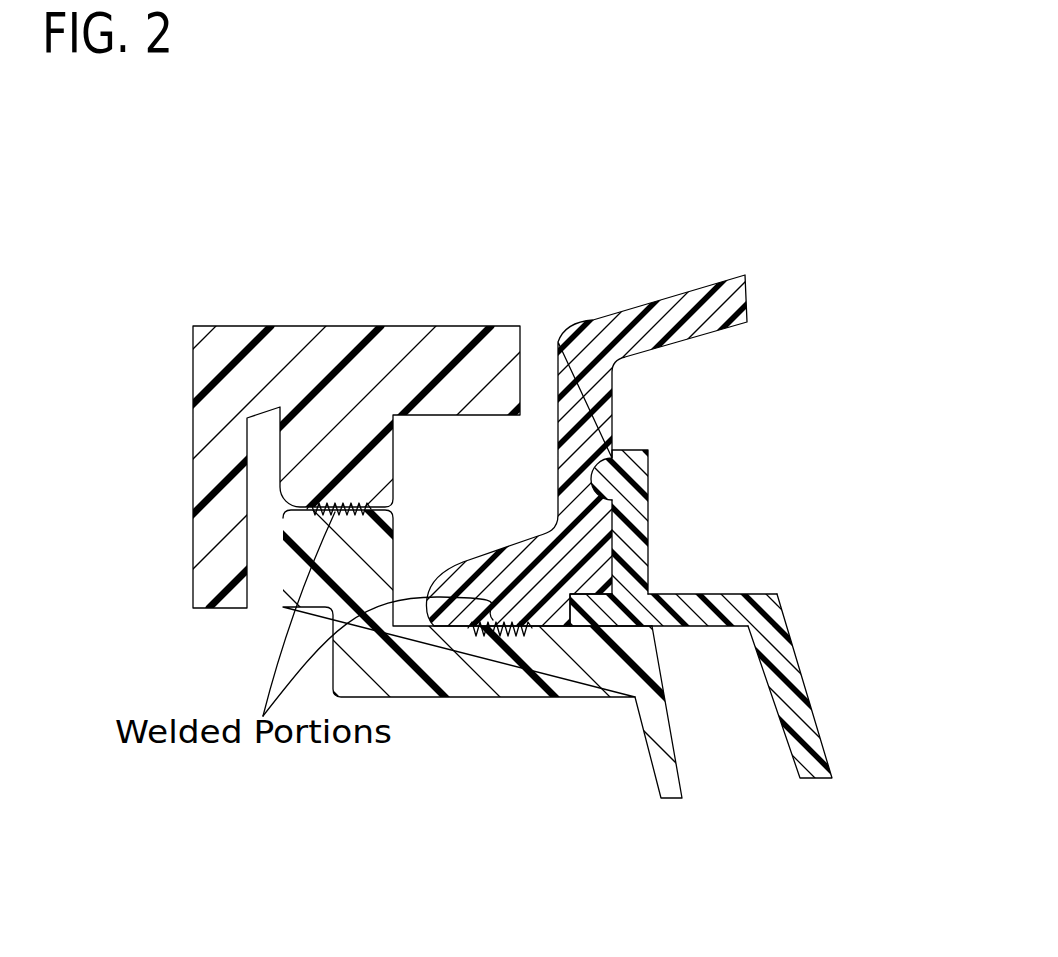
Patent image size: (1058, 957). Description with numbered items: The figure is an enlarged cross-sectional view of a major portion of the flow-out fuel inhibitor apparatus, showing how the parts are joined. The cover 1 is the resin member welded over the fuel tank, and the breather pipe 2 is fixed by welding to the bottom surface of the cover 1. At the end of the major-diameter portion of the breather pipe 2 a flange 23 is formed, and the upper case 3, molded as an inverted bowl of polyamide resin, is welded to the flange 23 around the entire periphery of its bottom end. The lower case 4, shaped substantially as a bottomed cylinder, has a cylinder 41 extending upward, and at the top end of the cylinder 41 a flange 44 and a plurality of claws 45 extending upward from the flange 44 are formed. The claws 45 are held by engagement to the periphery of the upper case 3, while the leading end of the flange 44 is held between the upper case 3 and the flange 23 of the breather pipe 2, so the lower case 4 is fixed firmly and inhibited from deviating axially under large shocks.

The cover 1 is at (347, 340).
The breather pipe 2 is at (484, 666).
The flange 23 is at (470, 688).
The upper case 3 is at (697, 290).
The lower case 4 is at (685, 614).
The cylinder 41 is at (790, 675).
The flange 44 is at (722, 608).
The claws 45 is at (630, 478).